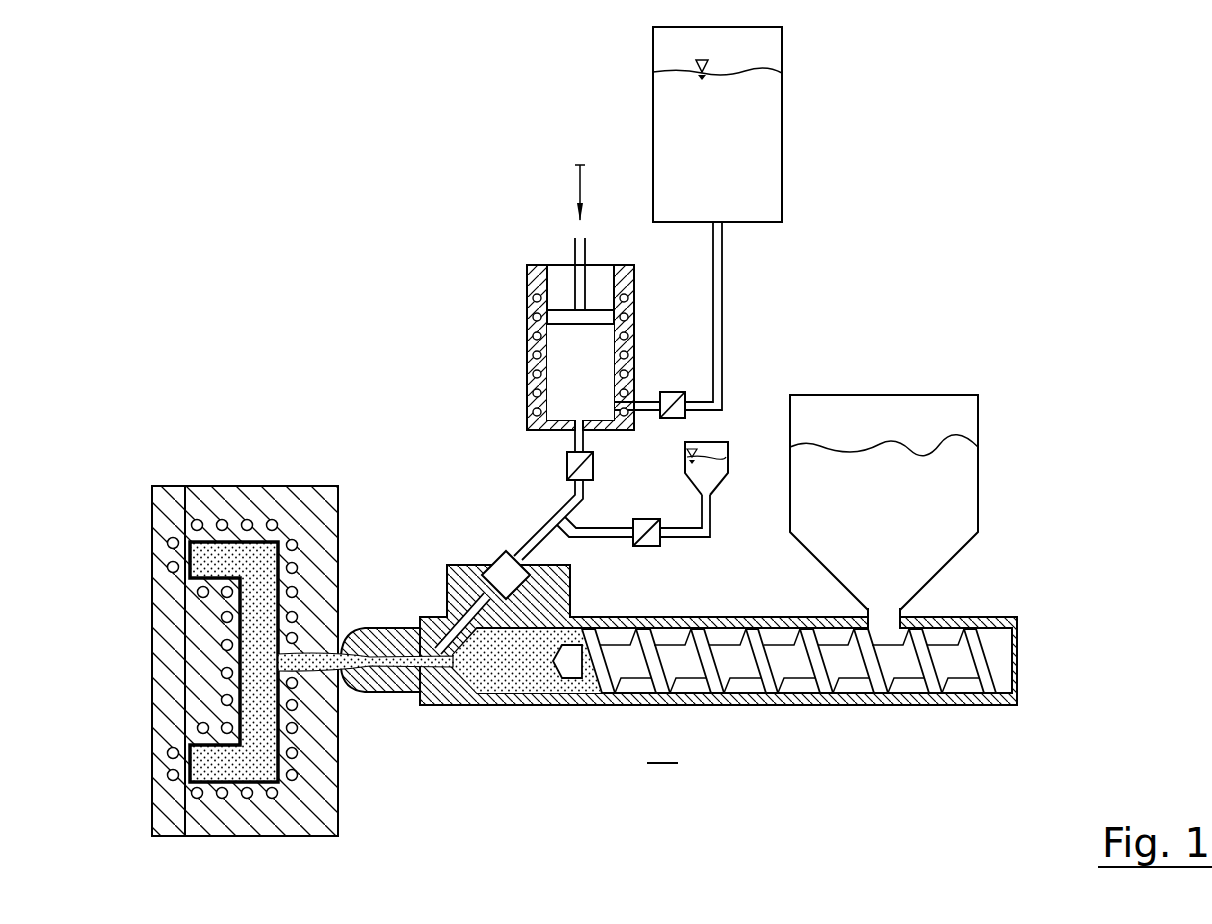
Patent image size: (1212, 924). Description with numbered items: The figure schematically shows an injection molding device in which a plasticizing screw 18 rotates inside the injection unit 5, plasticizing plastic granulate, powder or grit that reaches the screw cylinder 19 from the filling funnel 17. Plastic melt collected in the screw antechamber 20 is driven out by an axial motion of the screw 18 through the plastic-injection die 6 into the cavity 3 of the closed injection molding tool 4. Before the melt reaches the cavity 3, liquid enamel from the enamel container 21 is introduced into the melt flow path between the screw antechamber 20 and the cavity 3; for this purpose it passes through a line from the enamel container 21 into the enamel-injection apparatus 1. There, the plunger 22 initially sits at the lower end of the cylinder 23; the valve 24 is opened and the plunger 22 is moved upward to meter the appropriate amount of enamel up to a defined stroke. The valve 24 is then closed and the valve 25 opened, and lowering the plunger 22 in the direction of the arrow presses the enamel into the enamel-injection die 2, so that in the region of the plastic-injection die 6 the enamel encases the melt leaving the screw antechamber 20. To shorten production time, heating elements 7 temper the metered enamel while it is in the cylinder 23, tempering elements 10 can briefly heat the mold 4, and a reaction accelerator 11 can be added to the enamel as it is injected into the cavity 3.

The enamel-injection apparatus 1 is at (573, 392).
The enamel-injection die 2 is at (492, 563).
The cavity 3 is at (257, 733).
The injection molding tool 4 is at (248, 825).
The injection unit 5 is at (647, 714).
The plastic-injection die 6 is at (397, 693).
The heating elements 7 is at (524, 336).
The tempering elements 10 is at (216, 518).
The reaction accelerator 11 is at (713, 477).
The filling funnel 17 is at (938, 410).
The plasticizing screw 18 is at (798, 668).
The screw cylinder 19 is at (900, 696).
The screw antechamber 20 is at (522, 681).
The enamel container 21 is at (755, 51).
The plunger 22 is at (605, 310).
The cylinder 23 is at (527, 265).
The valve 24 is at (667, 383).
The valve 25 is at (563, 462).